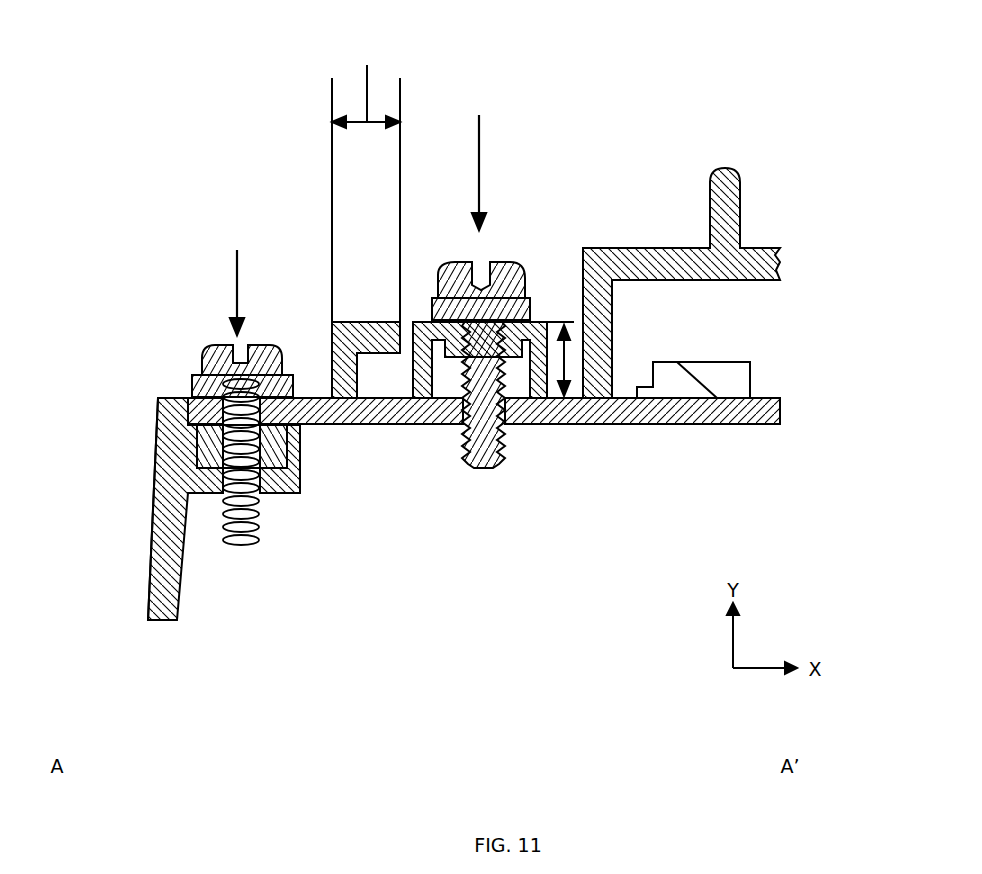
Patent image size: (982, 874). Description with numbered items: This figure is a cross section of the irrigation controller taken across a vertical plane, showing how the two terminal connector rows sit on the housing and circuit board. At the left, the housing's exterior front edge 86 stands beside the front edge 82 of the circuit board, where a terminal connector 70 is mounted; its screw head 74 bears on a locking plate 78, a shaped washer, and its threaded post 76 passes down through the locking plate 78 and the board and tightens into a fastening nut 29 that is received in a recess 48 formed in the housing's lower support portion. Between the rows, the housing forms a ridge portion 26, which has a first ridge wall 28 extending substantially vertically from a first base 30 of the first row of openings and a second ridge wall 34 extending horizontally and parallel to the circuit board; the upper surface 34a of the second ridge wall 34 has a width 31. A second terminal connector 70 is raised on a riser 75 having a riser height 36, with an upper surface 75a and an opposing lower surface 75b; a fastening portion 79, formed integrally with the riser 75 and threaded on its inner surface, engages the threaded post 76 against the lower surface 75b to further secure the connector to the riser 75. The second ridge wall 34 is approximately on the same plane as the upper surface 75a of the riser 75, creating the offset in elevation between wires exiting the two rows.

The ridge portion 26 is at (332, 320).
The first ridge wall 28 is at (348, 483).
The fastening nut 29 is at (202, 447).
The first base 30 is at (340, 430).
The width 31 is at (366, 173).
The second ridge wall 34 is at (352, 337).
The upper surface 34a is at (373, 318).
The riser height 36 is at (567, 362).
The recess 48 is at (213, 488).
The terminal connector 70 is at (353, 201).
The screw head 74 is at (508, 268).
The riser 75 is at (537, 388).
The upper surface 75a is at (530, 335).
The lower surface 75b is at (528, 338).
The threaded post 76 is at (240, 543).
The locking plate 78 is at (189, 375).
The fastening portion 79 is at (452, 350).
The front edge 82 is at (188, 403).
The exterior front edge 86 is at (155, 417).